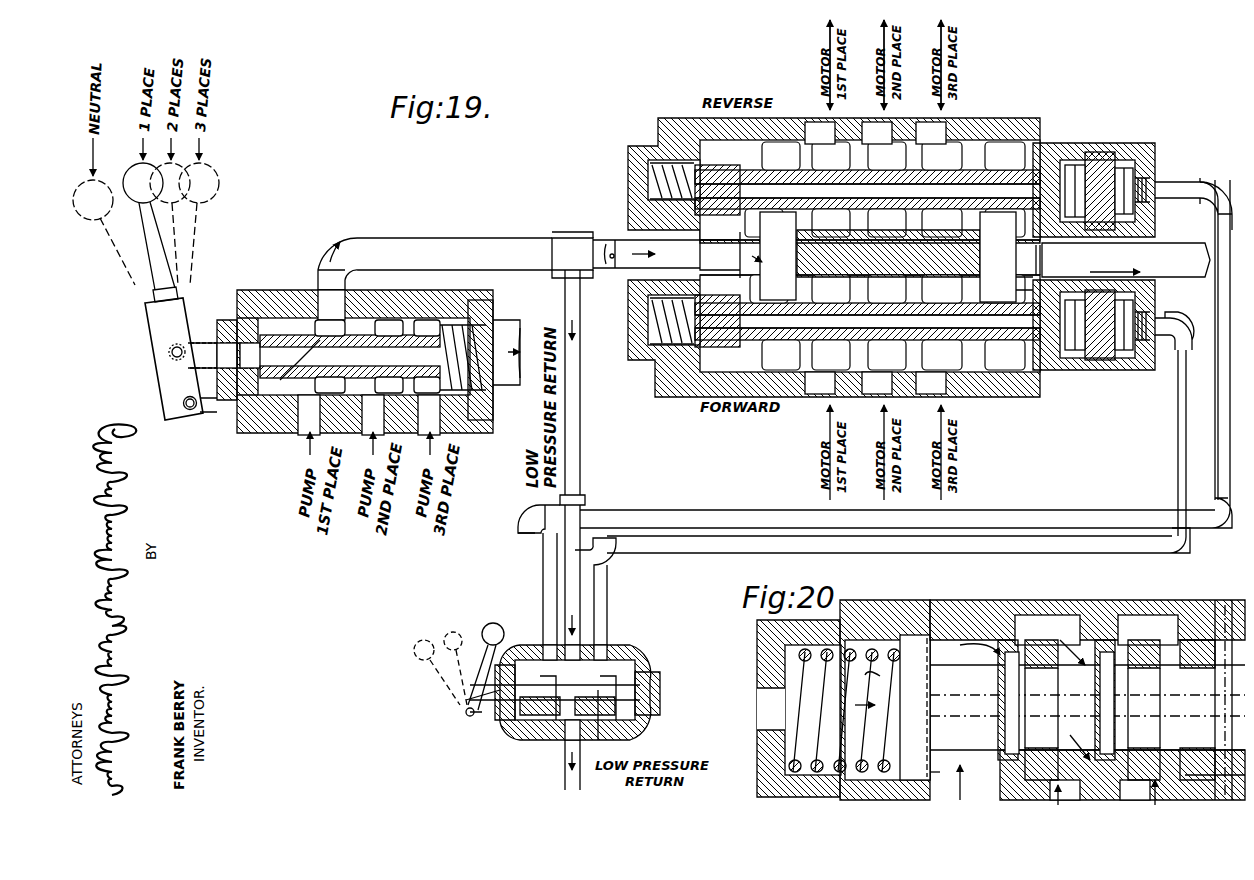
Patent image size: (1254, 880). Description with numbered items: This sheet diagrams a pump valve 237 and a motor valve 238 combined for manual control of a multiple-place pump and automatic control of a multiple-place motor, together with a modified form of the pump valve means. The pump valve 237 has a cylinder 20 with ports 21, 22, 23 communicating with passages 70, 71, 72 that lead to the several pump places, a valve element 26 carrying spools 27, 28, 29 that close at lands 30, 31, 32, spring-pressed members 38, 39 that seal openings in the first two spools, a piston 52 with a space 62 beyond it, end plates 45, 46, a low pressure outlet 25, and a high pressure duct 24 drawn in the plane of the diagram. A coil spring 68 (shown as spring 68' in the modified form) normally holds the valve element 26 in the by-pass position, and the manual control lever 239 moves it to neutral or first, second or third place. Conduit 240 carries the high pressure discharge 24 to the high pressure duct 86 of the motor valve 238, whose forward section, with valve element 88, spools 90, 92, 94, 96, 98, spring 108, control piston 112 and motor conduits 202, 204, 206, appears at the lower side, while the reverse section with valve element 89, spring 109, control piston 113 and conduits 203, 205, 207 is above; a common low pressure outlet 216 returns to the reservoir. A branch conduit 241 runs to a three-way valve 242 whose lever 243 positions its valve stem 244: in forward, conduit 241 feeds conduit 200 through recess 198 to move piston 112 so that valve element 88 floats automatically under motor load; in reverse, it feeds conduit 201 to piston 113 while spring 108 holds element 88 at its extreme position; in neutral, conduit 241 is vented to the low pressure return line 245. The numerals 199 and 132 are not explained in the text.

In FIG. 19, the manual control lever 239 is at (134, 176).
In FIG. 19, the valve element 26 is at (200, 342).
In FIG. 20, the valve element 26 is at (867, 685).
In FIG. 19, the pump valve 237 is at (300, 282).
In FIG. 19, the end plate 45 is at (254, 290).
In FIG. 20, the end plate 45 is at (757, 659).
In FIG. 19, the high pressure duct 24 is at (335, 312).
In FIG. 20, the high pressure duct 24 is at (930, 772).
In FIG. 19, the spool 27 is at (330, 393).
In FIG. 20, the spool 27 is at (1040, 650).
In FIG. 19, the spool 28 is at (386, 393).
In FIG. 20, the spool 28 is at (1135, 650).
In FIG. 19, the spool 29 is at (428, 393).
In FIG. 20, the spool 29 is at (1185, 656).
In FIG. 19, the piston 52 is at (290, 380).
In FIG. 19, the coil spring 68 is at (463, 322).
In FIG. 19, the low pressure outlet 25 is at (484, 420).
In FIG. 20, the low pressure outlet 25 is at (1200, 792).
In FIG. 19, the end plate 46 is at (488, 308).
In FIG. 19, the passage 70 is at (300, 432).
In FIG. 19, the passage 71 is at (360, 432).
In FIG. 19, the passage 72 is at (436, 433).
In FIG. 19, the conduit 240 is at (614, 242).
In FIG. 19, the branch conduit 241 is at (582, 505).
In FIG. 19, the three-way valve 242 is at (620, 662).
In FIG. 19, the control lever 243 is at (500, 632).
In FIG. 19, the valve stem 244 is at (605, 725).
In FIG. 19, the low pressure return line 245 is at (565, 763).
In FIG. 19, the conduit 201 is at (995, 515).
In FIG. 19, the fluid conduit 200 is at (1035, 545).
In FIG. 19, the motor valve 238 is at (990, 116).
In FIG. 19, the spring 109 is at (655, 185).
In FIG. 19, the valve element 89 is at (1032, 170).
In FIG. 19, the suction inlet conduit 207 is at (820, 133).
In FIG. 19, the suction inlet conduit 205 is at (877, 133).
In FIG. 19, the suction inlet conduit 203 is at (931, 133).
In FIG. 19, the pipe connection 199 is at (1150, 178).
In FIG. 19, the fluid piston means 113 is at (1102, 175).
In FIG. 19, the low pressure outlet 216 is at (1033, 248).
In FIG. 19, the spool 98 is at (720, 345).
In FIG. 19, the spring 108 is at (655, 323).
In FIG. 19, the valve element 88 is at (1020, 345).
In FIG. 19, the high pressure outlet conduit 206 is at (820, 383).
In FIG. 19, the high pressure outlet conduit 204 is at (877, 383).
In FIG. 19, the high pressure outlet conduit 202 is at (931, 383).
In FIG. 19, the high pressure duct 86 is at (720, 255).
In FIG. 19, the spool 96 is at (781, 285).
In FIG. 19, the spool 94 is at (858, 297).
In FIG. 19, the passage 132 is at (910, 296).
In FIG. 19, the spool 92 is at (928, 298).
In FIG. 19, the spool 90 is at (988, 292).
In FIG. 19, the recess 198 is at (1120, 316).
In FIG. 19, the fluid piston means 112 is at (1085, 340).
In FIG. 20, the cylinder 20 is at (880, 642).
In FIG. 20, the space 62 is at (790, 724).
In FIG. 20, the spring 68' is at (812, 710).
In FIG. 20, the land 30 is at (1002, 640).
In FIG. 20, the land 31 is at (1100, 640).
In FIG. 20, the land 32 is at (1205, 640).
In FIG. 20, the spring-pressed member 38 is at (1013, 648).
In FIG. 20, the spring-pressed member 39 is at (1100, 660).
In FIG. 20, the port 21 is at (990, 768).
In FIG. 20, the port 22 is at (1110, 780).
In FIG. 20, the port 23 is at (1185, 785).